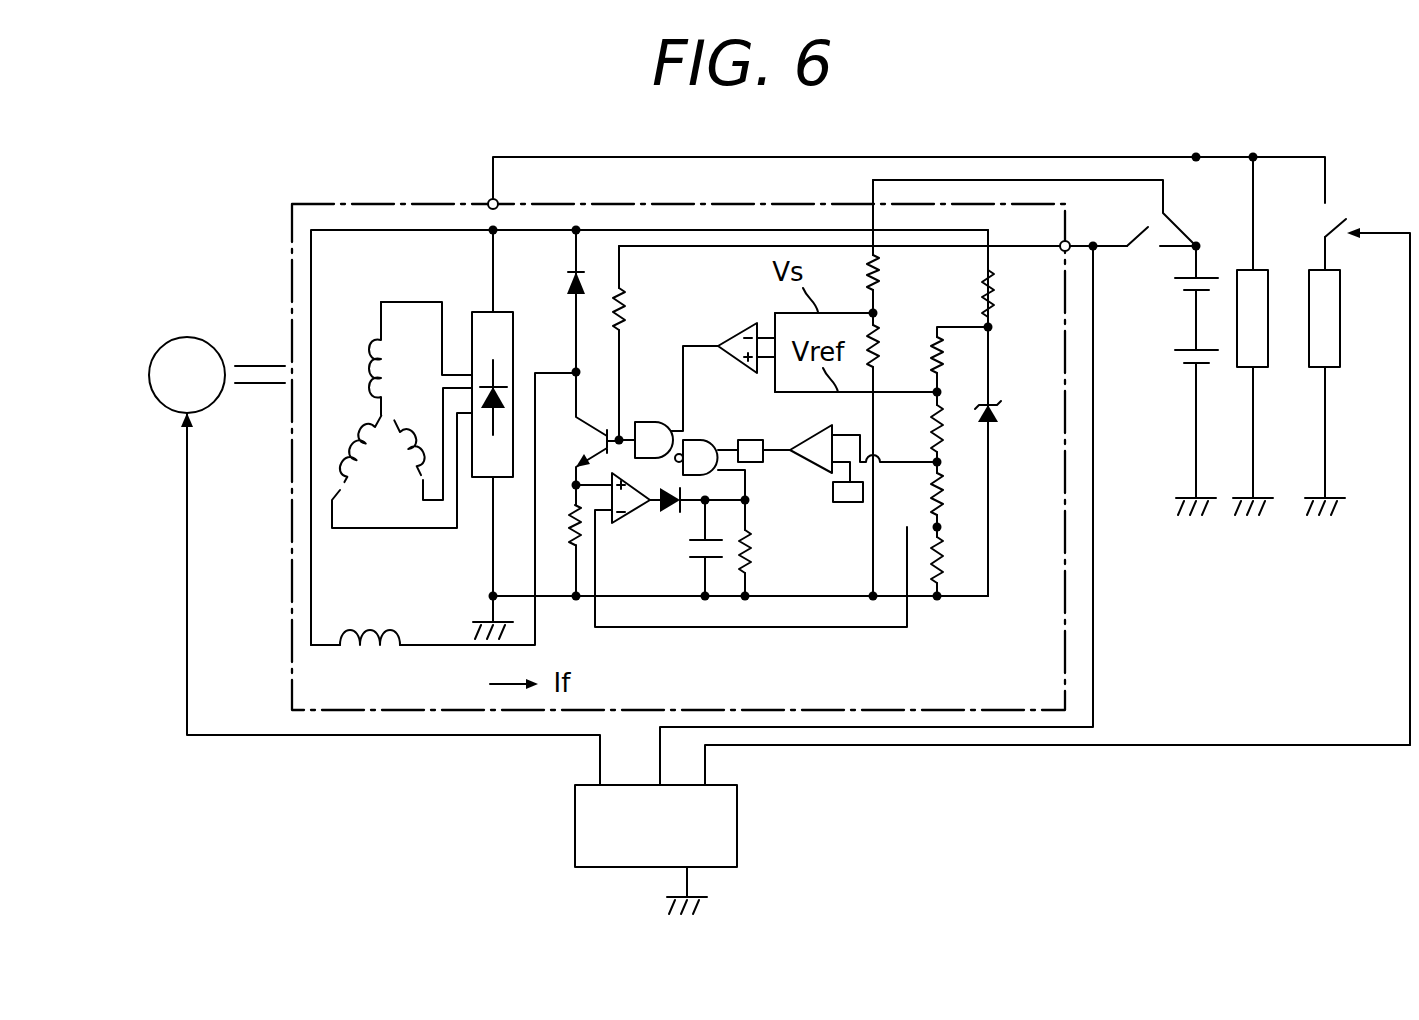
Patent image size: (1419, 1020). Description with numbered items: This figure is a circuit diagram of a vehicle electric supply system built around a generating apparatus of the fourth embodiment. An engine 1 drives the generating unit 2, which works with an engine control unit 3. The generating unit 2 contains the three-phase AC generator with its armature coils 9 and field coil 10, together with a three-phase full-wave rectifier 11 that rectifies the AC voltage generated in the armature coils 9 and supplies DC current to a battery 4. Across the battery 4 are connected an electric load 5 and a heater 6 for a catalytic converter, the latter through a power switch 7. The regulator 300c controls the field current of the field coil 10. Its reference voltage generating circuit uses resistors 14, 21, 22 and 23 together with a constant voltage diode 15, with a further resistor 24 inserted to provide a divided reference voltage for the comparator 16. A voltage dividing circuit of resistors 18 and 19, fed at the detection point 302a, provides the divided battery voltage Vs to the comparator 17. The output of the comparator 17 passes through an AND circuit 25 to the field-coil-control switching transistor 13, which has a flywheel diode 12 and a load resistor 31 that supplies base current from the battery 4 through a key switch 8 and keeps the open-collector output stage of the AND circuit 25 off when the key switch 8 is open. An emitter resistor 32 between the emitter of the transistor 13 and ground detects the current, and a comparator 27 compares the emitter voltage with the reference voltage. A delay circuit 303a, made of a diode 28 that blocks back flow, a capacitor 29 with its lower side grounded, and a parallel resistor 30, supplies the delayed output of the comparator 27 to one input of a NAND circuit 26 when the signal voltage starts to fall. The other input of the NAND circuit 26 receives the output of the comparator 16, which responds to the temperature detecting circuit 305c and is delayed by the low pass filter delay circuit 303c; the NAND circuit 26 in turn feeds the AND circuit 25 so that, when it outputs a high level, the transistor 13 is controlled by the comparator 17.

The engine 1 is at (187, 337).
The generating unit 2 is at (353, 204).
The engine control unit 3 is at (737, 837).
The battery 4 is at (1182, 362).
The electric load 5 is at (1263, 367).
The heater (EHC) for a catalytic converter 6 is at (1335, 367).
The power switch 7 is at (1335, 215).
The key switch 8 is at (1148, 243).
The armature coils 9 is at (373, 410).
The field coil 10 is at (362, 657).
The three-phase full-wave rectifier 11 is at (515, 370).
The flywheel diode 12 is at (567, 282).
The field-coil-control switching transistor 13 is at (585, 420).
The resistor 14 is at (995, 293).
The constant voltage diode 15 is at (1002, 412).
The comparator 16 is at (808, 445).
The comparator 17 is at (742, 328).
The resistor 18 is at (880, 278).
The resistor 19 is at (882, 335).
The resistor 21 is at (945, 357).
The resistor 22 is at (940, 428).
The resistor 23 is at (945, 495).
The resistor 24 is at (945, 563).
The AND circuit 25 is at (652, 420).
The NAND circuit 26 is at (705, 465).
The comparator 27 is at (632, 512).
The diode 28 is at (667, 512).
The capacitor 29 is at (698, 558).
The resistor 30 is at (752, 553).
The load resistor 31 is at (628, 298).
The emitter resistor 32 is at (568, 523).
The voltage regulator 300c is at (922, 636).
The voltage detection terminal 302a is at (852, 273).
The delay circuit 303a is at (727, 606).
The delay circuit 303c is at (750, 437).
The temperature detecting circuit 305c is at (833, 490).